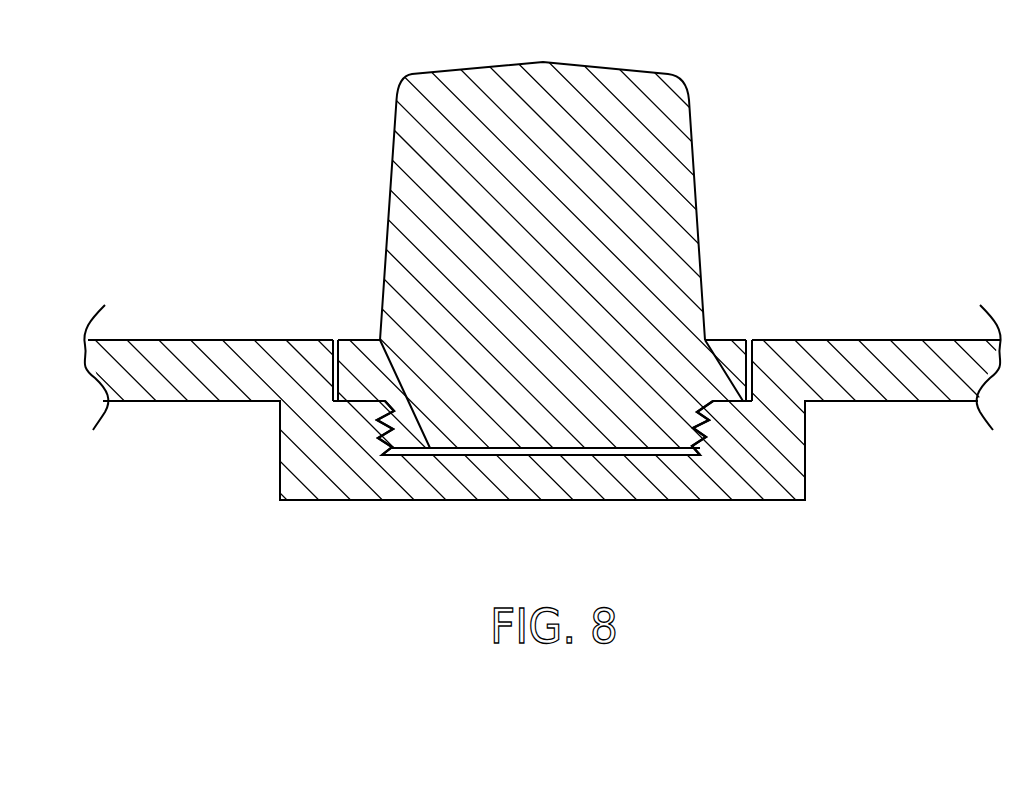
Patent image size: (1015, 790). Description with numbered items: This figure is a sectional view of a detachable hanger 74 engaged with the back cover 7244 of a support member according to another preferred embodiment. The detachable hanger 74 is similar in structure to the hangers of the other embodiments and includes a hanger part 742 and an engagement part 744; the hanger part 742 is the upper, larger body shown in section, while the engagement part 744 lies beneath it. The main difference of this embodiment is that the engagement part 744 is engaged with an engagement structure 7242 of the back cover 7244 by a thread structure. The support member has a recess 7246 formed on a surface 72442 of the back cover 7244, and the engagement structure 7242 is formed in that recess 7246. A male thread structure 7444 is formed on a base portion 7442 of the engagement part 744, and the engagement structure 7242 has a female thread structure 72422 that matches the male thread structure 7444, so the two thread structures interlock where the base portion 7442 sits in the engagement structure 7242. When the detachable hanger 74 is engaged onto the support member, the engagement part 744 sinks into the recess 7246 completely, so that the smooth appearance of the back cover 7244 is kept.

The detachable hanger 74 is at (668, 258).
The hanger part 742 is at (658, 170).
The engagement part 744 is at (668, 306).
The base portion 7442 is at (647, 340).
The male thread structure 7444 is at (690, 413).
The engagement structure 7242 is at (752, 507).
The female thread structure 72422 is at (712, 430).
The back cover 7244 is at (168, 352).
The surface 72442 is at (272, 335).
The recess 7246 is at (757, 376).